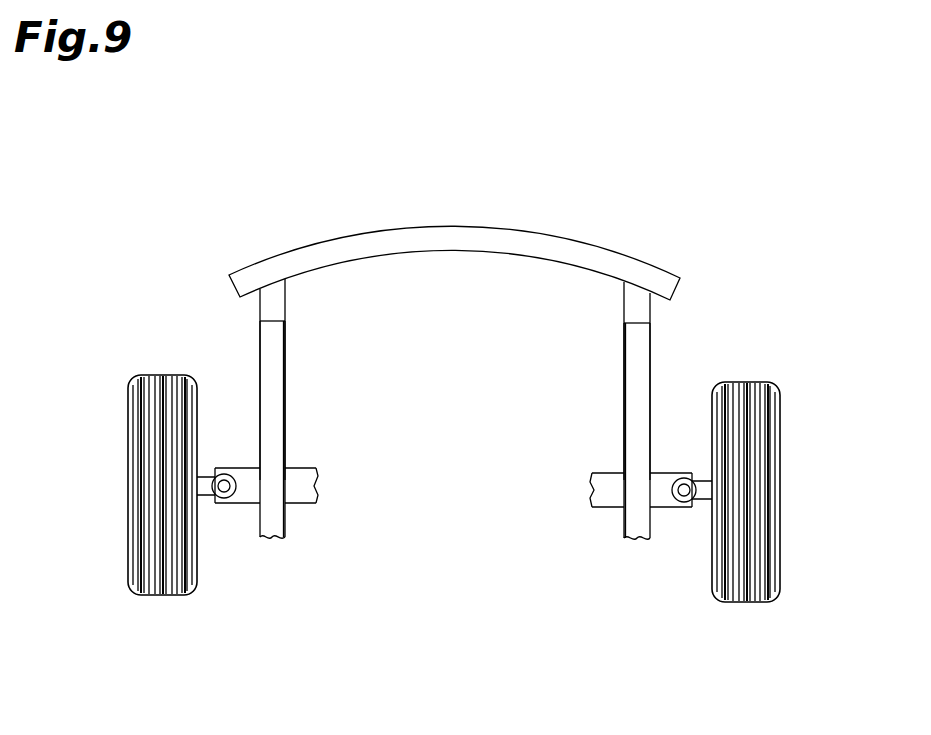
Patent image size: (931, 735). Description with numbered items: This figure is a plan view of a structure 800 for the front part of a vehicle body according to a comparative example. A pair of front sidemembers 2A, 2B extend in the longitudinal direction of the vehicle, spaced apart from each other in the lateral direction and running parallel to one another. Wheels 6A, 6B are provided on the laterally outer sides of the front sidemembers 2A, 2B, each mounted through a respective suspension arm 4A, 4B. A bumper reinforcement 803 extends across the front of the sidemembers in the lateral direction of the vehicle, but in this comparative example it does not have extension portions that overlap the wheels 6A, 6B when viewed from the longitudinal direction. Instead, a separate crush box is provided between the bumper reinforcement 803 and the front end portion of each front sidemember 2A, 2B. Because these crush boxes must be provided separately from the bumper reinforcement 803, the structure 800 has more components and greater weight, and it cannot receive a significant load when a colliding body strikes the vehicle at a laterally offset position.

The structure for a front part of a vehicle body 800 is at (302, 190).
The bumper reinforcement 803 is at (532, 232).
The front sidemember 2A is at (276, 422).
The front sidemember 2B is at (636, 418).
The suspension arm 4A is at (300, 498).
The suspension arm 4B is at (610, 500).
The wheel 6A is at (156, 490).
The wheel 6B is at (758, 496).